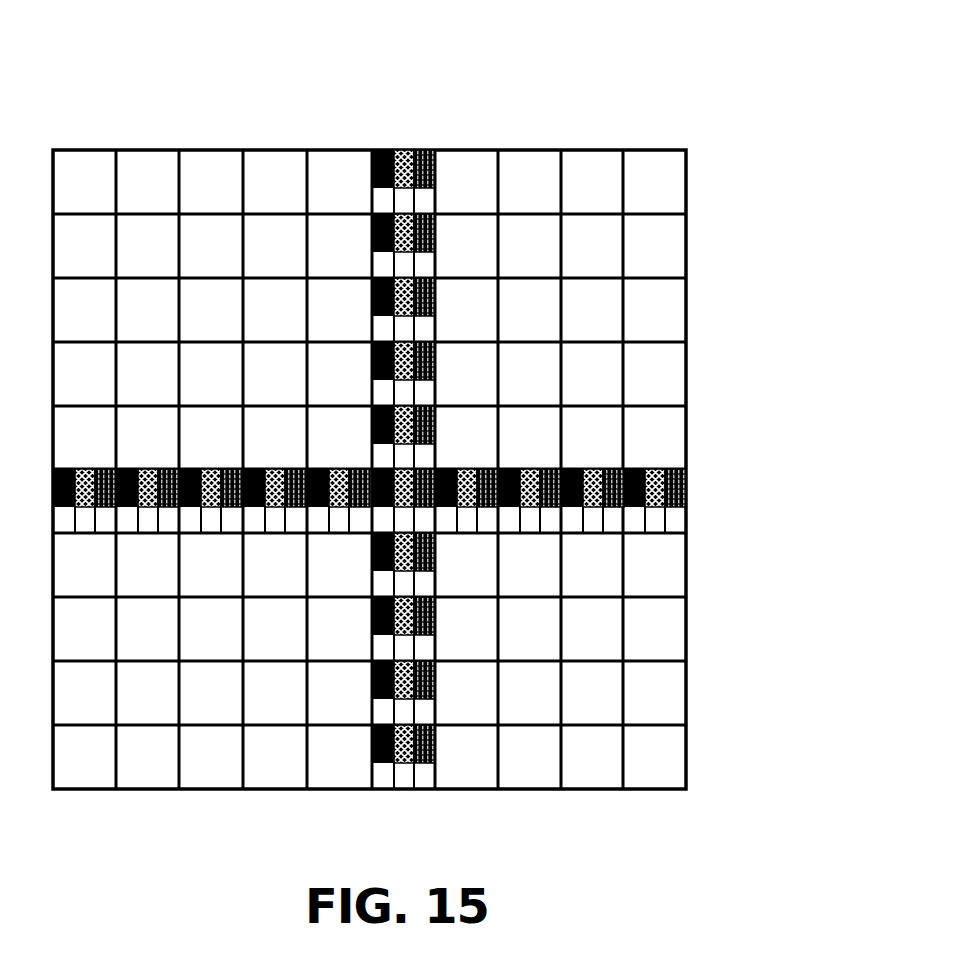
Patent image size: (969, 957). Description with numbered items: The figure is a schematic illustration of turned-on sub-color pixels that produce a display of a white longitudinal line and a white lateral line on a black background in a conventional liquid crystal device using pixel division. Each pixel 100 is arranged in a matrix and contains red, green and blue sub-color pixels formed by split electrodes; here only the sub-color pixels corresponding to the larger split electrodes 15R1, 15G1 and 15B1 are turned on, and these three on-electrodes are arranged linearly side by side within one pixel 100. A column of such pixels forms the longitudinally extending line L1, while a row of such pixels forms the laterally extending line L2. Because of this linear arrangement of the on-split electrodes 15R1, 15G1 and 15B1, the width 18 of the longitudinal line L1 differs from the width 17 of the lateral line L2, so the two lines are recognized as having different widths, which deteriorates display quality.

The pixel 100 is at (425, 452).
The larger split electrode (red) 15R1 is at (382, 150).
The larger split electrode (green) 15G1 is at (398, 150).
The larger split electrode (blue) 15B1 is at (428, 150).
The longitudinal line L1 is at (416, 113).
The lateral line L2 is at (742, 496).
The width of lateral line 17 is at (702, 471).
The width of longitudinal line 18 is at (436, 813).